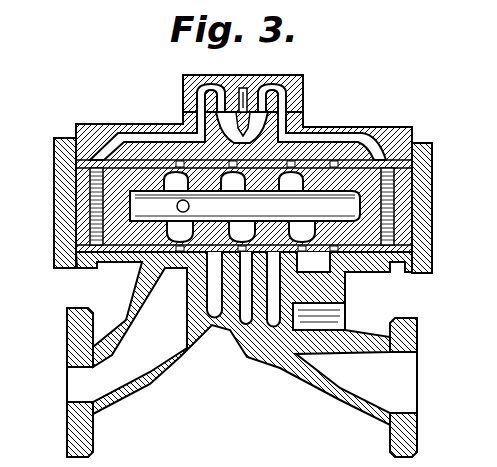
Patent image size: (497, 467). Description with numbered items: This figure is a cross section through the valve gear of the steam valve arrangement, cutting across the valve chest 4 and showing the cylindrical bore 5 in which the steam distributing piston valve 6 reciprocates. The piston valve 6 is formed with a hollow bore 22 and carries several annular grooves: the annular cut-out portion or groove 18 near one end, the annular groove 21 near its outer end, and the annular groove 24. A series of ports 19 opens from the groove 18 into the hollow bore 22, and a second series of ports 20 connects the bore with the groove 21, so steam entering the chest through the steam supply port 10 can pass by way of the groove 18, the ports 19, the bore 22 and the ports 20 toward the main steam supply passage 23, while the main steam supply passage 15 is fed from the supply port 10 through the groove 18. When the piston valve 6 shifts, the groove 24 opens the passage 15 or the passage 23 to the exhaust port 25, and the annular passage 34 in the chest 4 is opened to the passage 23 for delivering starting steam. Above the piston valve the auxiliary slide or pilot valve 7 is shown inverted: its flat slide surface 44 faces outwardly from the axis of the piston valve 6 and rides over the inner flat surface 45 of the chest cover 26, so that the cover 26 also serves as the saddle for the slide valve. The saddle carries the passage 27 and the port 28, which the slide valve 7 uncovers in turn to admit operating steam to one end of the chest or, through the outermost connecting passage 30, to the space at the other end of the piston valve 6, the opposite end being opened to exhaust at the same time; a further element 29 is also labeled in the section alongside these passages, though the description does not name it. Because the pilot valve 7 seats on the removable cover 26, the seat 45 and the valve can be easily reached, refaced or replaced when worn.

The valve chest 4 is at (90, 130).
The cylindrical bore 5 is at (97, 264).
The piston valve 6 is at (368, 190).
The auxiliary slide valve 7 is at (305, 113).
The steam supply port 10 is at (73, 385).
The main steam supply passage 15 is at (215, 312).
The annular groove 18 is at (183, 255).
The ports 19 is at (189, 208).
The ports 20 is at (327, 143).
The annular groove 21 is at (382, 258).
The hollow bore 22 is at (382, 218).
The main steam supply passage 23 is at (262, 337).
The annular groove 24 is at (345, 292).
The exhaust port 25 is at (405, 382).
The chest cover 26 is at (183, 80).
The passage 27 is at (146, 133).
The port 28 is at (288, 77).
The passage 29 is at (352, 140).
The connecting passage 30 is at (418, 146).
The annular passage 34 is at (350, 271).
The flat slide surface 44 is at (246, 80).
The inner flat surface 45 is at (262, 112).